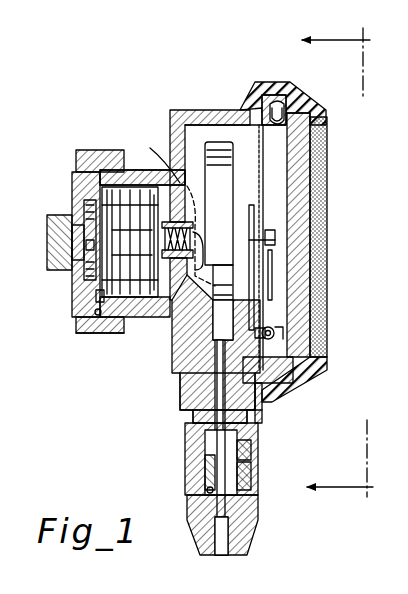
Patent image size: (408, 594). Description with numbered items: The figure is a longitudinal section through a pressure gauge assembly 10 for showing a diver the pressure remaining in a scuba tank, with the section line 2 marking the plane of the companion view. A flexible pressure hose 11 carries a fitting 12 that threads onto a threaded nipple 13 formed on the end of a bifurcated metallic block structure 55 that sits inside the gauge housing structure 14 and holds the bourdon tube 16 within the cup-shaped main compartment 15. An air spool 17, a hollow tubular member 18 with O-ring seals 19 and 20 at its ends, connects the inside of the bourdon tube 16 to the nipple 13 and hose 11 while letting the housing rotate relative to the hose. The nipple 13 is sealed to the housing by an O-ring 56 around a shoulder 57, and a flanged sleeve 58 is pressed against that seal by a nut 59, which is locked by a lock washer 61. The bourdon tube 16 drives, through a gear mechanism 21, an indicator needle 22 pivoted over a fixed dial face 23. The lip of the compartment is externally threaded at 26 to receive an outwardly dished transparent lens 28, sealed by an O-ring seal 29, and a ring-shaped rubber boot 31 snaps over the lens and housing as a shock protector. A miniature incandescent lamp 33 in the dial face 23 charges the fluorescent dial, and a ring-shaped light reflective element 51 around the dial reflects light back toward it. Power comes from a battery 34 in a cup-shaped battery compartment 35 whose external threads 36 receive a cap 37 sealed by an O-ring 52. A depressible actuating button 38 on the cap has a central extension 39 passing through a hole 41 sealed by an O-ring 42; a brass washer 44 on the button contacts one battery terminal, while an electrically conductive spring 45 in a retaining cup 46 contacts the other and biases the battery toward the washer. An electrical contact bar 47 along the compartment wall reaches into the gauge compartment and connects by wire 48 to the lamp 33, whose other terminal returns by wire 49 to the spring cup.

The section line 2- 2 is at (343, 264).
The pressure gauge assembly 10 is at (343, 152).
The flexible pressure hose 11 is at (188, 500).
The fitting 12 is at (185, 455).
The threaded nipple 13 is at (193, 428).
The gauge housing structure 14 is at (197, 110).
The main compartment 15 is at (218, 108).
The bourdon tube 16 is at (226, 160).
The air spool 17 is at (253, 470).
The hollow tubular member 18 is at (205, 488).
The O-ring seal 19 is at (257, 515).
The O-ring seal 20 is at (255, 447).
The gear mechanism 21 is at (256, 236).
The indicator needle 22 is at (318, 190).
The dial face 23 is at (268, 313).
The external threads 26 is at (278, 97).
The transparent lens 28 is at (310, 260).
The O-ring seal 29 is at (312, 370).
The rubber boot 31 is at (262, 82).
The miniature incandescent lamp 33 is at (275, 335).
The battery 34 is at (72, 192).
The battery compartment 35 is at (126, 326).
The external threads 36 is at (95, 334).
The cap 37 is at (78, 150).
The actuating button 38 is at (48, 255).
The central extension 39 is at (74, 236).
The hole 41 is at (85, 218).
The O-ring 42 is at (86, 270).
The brass washer 44 is at (98, 298).
The electrically conductive spring 45 is at (152, 240).
The retaining cup 46 is at (196, 238).
The electrical contact bar 47 is at (130, 170).
The wire 48 is at (157, 207).
The wire 49 is at (165, 312).
The light reflective element 51 is at (284, 112).
The O-ring 52 is at (80, 318).
The bifurcated metallic block structure 55 is at (195, 345).
The O-ring 56 is at (195, 375).
The shoulder 57 is at (195, 365).
The flanged sleeve 58 is at (265, 404).
The nut 59 is at (182, 410).
The lock washer 61 is at (262, 424).